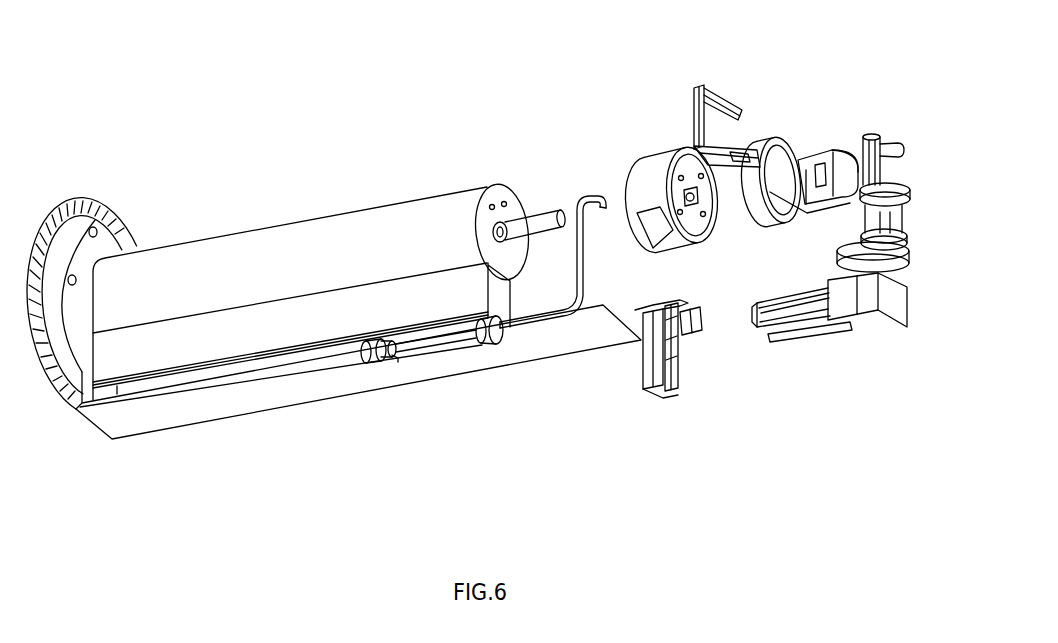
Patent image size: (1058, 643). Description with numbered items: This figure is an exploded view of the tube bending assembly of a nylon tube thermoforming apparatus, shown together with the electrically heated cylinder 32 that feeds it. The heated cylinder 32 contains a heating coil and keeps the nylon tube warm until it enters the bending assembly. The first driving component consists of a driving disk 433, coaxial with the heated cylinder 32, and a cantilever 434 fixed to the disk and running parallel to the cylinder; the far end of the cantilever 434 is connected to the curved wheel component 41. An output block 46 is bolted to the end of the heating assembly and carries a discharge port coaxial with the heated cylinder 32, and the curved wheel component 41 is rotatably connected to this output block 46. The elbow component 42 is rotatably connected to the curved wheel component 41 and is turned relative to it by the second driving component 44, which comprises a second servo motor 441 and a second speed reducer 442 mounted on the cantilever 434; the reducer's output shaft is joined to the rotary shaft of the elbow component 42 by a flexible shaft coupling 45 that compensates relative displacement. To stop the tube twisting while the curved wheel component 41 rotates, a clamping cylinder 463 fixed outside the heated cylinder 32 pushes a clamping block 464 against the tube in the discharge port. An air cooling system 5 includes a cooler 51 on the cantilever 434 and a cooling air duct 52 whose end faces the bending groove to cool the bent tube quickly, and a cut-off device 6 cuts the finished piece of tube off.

The electrically heated cylinder 32 is at (313, 220).
The driving disk 433 is at (108, 228).
The cantilever 434 is at (321, 378).
The cooler 51 is at (438, 343).
The air cooling system 5 is at (499, 345).
The cooling air duct 52 is at (571, 316).
The output block 46 is at (642, 157).
The cut-off device 6 is at (715, 113).
The curved wheel component 41 is at (800, 152).
The elbow component 42 is at (879, 130).
The shaft coupling 45 is at (903, 215).
The second driving component 44 is at (895, 333).
The second servo motor 441 is at (776, 325).
The second speed reducer 442 is at (862, 315).
The clamping cylinder 463 is at (683, 400).
The clamping block 464 is at (697, 315).